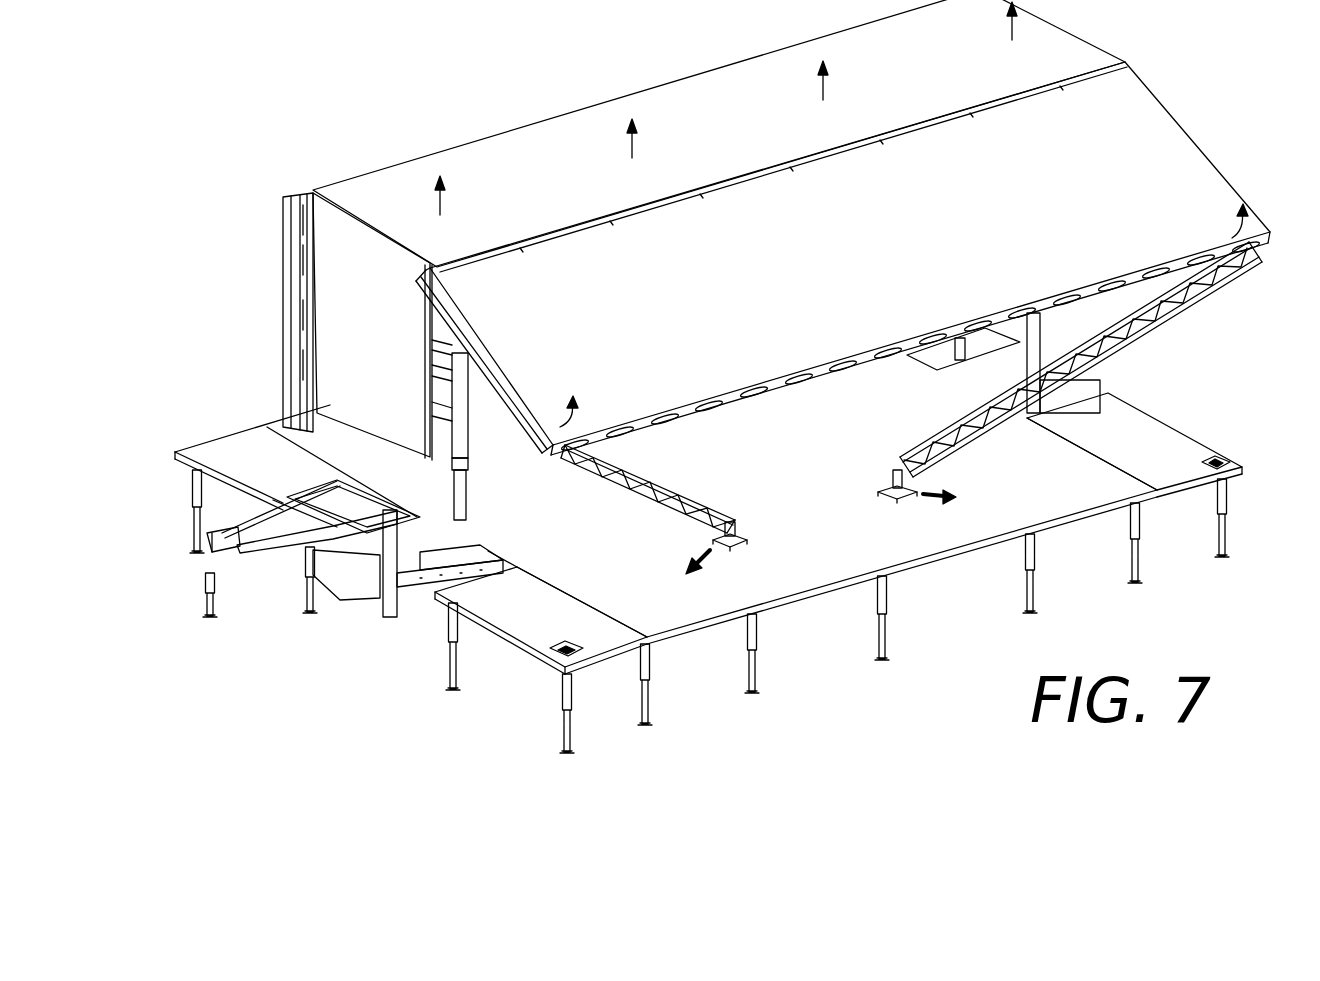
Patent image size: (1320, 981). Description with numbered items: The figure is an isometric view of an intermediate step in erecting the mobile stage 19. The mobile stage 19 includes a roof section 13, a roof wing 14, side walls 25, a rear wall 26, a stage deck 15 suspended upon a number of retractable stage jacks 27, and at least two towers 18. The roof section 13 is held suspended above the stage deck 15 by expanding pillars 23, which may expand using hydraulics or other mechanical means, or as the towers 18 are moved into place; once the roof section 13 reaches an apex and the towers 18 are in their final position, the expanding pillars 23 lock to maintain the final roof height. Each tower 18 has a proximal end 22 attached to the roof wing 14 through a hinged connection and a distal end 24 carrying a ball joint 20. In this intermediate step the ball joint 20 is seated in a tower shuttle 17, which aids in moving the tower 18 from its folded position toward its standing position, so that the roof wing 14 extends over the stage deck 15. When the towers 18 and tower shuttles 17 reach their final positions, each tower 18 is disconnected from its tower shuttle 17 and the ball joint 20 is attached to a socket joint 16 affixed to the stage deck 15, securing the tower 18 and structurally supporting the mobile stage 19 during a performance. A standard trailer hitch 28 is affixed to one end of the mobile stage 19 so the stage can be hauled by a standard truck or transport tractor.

The roof section 13 is at (516, 197).
The roof wing 14 is at (803, 290).
The stage deck 15 is at (630, 575).
The socket joint 16 is at (568, 645).
The tower shuttle 17 is at (821, 520).
The tower 18 is at (911, 393).
The mobile stage 19 is at (716, 395).
The ball joint 20 is at (745, 534).
The proximal end 22 is at (548, 462).
The expanding pillars 23 is at (448, 457).
The distal end 24 is at (712, 527).
The side walls 25 is at (390, 355).
The rear wall 26 is at (283, 250).
The retractable stage jacks 27 is at (573, 713).
The trailer hitch 28 is at (215, 543).